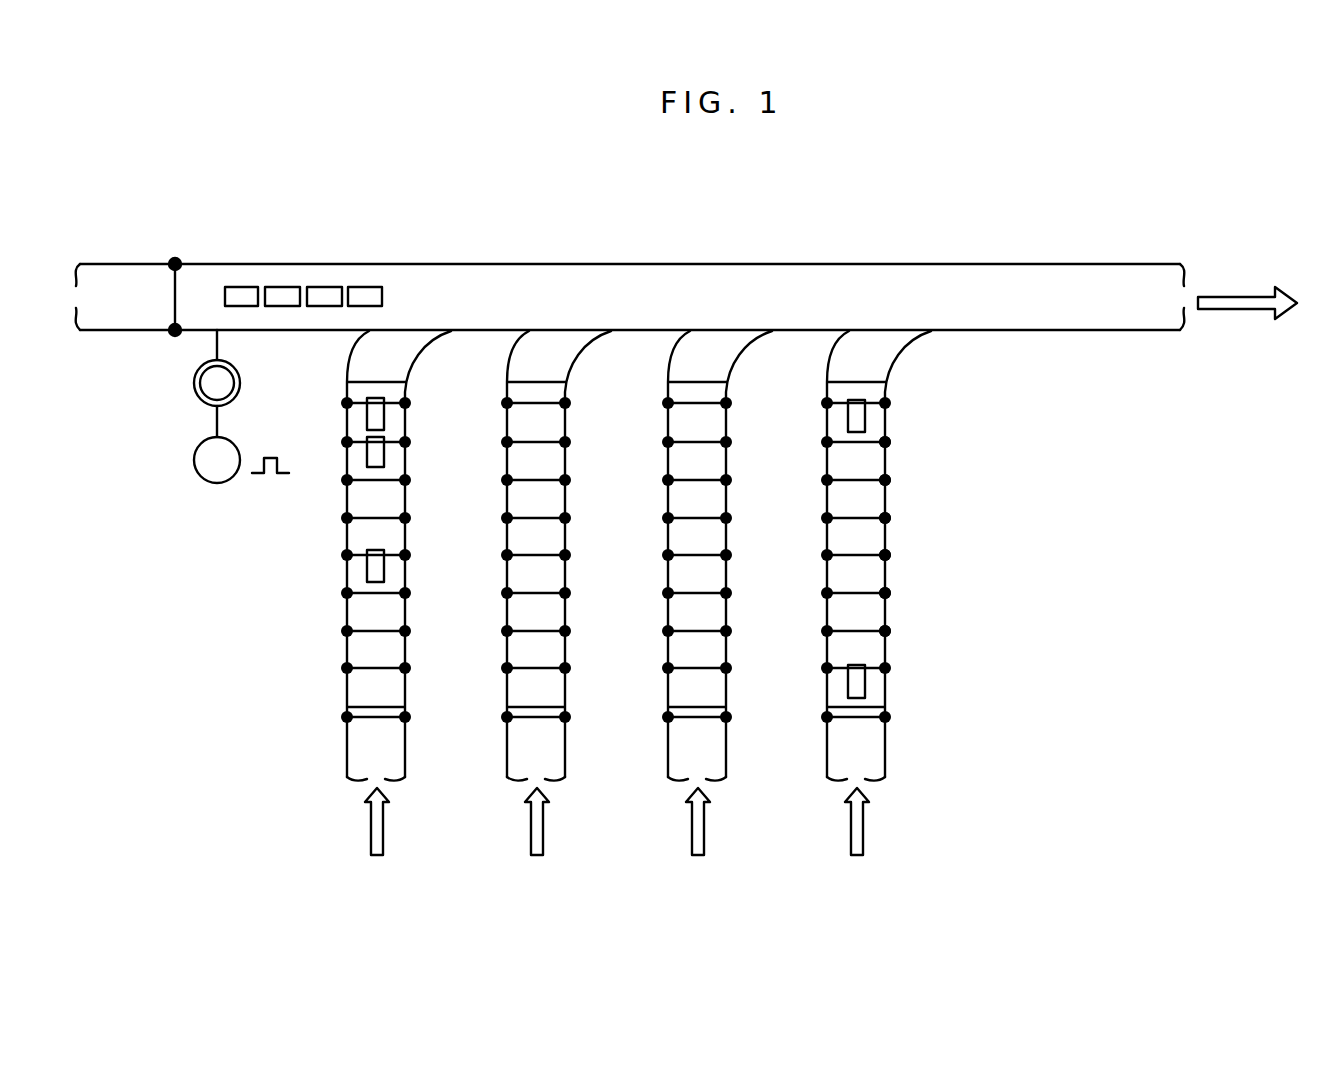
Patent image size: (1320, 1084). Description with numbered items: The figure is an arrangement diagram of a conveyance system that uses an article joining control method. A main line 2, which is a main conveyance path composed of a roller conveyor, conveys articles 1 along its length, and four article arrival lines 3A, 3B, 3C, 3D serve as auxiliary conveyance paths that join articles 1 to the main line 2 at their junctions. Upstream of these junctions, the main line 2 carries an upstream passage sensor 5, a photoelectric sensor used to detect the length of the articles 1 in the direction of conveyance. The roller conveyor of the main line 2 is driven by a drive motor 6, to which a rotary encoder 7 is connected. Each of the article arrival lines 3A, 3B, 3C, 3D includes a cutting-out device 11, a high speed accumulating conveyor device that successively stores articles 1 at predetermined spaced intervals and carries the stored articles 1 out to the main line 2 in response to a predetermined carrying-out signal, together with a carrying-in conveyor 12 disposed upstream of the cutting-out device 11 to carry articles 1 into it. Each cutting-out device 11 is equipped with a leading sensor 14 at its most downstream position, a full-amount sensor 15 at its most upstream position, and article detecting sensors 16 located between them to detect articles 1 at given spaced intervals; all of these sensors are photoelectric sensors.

The article 1 is at (241, 287).
The main line 2 is at (698, 292).
The article arrival line 3A is at (893, 599).
The article arrival line 3B is at (733, 596).
The article arrival line 3C is at (572, 596).
The article arrival line 3D is at (410, 596).
The upstream passage sensor 5 is at (177, 262).
The drive motor 6 is at (194, 384).
The rotary encoder 7 is at (194, 462).
The cutting-out device 11 is at (365, 614).
The carrying-in conveyor 12 is at (362, 752).
The leading sensor 14 is at (892, 403).
The full-amount sensor 15 is at (892, 670).
The article detecting sensor 16 is at (892, 442).